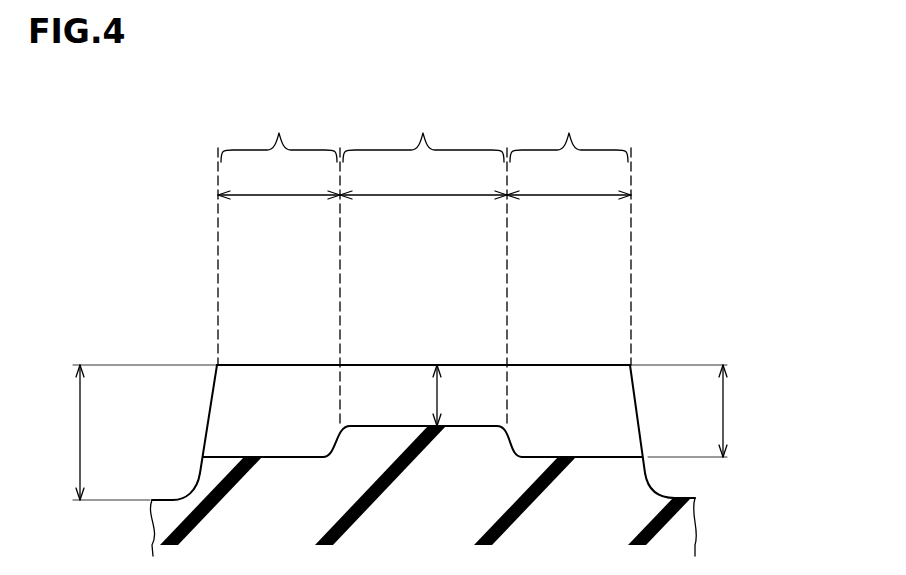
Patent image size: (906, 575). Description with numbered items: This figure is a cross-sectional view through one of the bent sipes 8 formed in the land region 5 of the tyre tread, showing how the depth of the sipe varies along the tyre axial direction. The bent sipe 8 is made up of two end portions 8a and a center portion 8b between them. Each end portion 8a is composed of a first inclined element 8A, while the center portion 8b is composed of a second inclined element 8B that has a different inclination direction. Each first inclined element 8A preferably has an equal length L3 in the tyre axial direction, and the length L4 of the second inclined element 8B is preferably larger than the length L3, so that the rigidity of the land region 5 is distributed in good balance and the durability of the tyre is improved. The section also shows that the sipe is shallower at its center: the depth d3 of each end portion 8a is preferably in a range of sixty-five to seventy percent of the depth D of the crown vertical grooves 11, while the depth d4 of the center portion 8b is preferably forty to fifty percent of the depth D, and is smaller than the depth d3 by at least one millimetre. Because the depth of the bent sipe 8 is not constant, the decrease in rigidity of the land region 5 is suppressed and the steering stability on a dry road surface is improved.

The land region 5 is at (729, 297).
The bent sipe 8 is at (112, 200).
The first inclined element 8A is at (577, 405).
The second inclined element 8B is at (385, 393).
The end portion 8a is at (424, 133).
The center portion 8b is at (423, 133).
The crown vertical groove 11 is at (180, 478).
The depth of crown vertical groove D is at (68, 432).
The depth of end portion d3 is at (741, 411).
The depth of center portion d4 is at (437, 395).
The length of first inclined element L3 is at (424, 181).
The length of second inclined element L4 is at (423, 181).